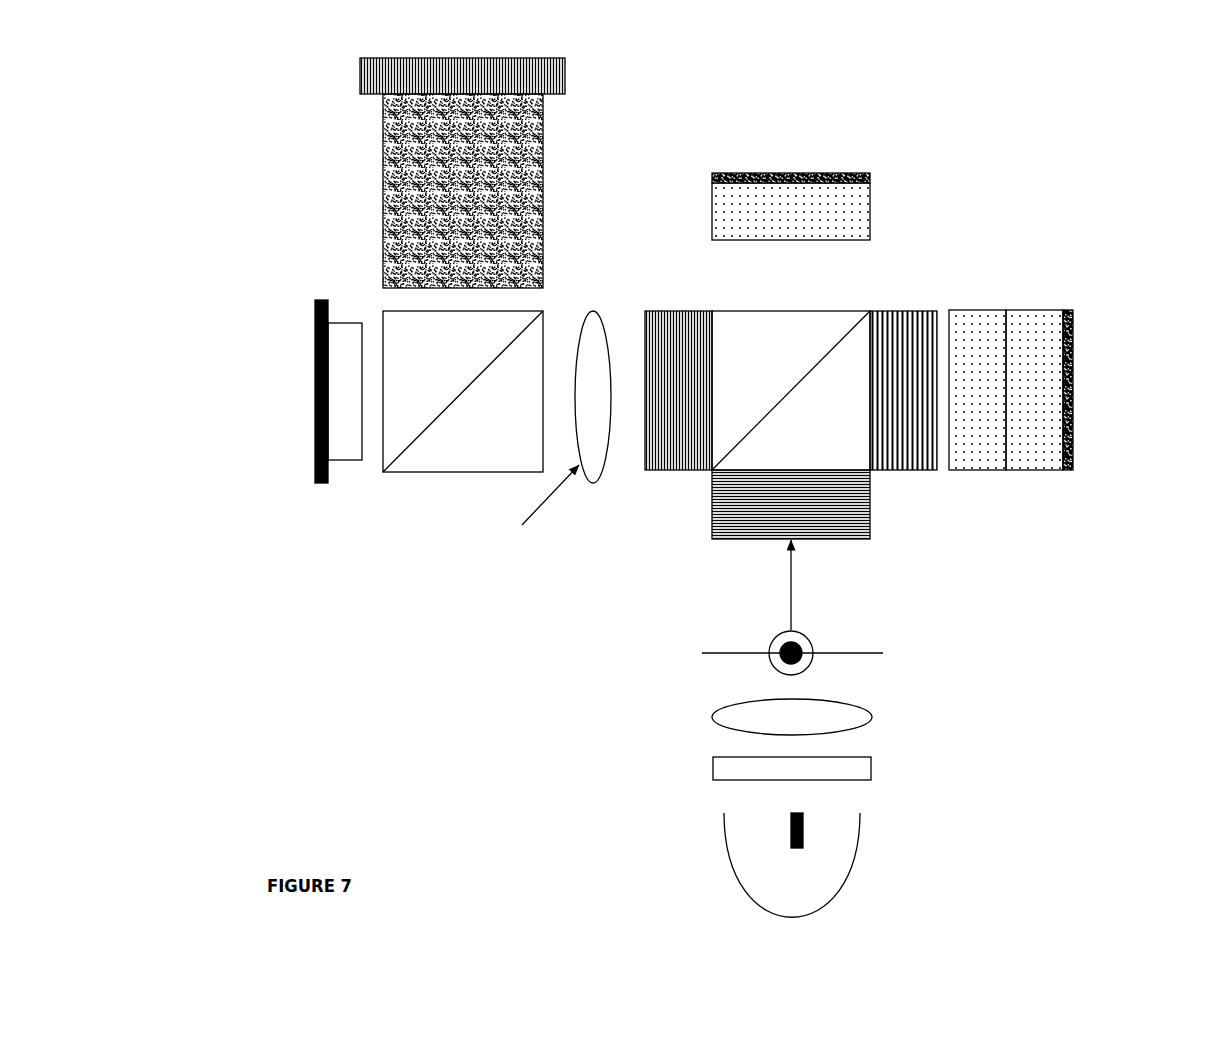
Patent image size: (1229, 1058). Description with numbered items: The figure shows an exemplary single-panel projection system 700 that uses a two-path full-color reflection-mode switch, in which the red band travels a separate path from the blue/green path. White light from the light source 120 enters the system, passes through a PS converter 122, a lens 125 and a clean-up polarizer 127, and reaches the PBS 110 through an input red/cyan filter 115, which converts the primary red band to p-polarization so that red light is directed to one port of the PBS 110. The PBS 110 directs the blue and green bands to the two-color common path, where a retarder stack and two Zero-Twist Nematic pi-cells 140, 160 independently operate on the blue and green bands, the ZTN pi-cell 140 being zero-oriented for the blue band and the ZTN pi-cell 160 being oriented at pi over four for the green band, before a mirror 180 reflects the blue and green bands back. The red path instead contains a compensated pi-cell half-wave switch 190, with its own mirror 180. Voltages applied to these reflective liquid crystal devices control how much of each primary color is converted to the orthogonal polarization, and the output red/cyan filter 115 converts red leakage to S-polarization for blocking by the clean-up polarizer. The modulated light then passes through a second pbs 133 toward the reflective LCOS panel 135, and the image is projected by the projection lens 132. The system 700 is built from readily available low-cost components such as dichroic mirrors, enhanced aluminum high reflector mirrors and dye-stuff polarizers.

The single-panel projection system 700 is at (200, 78).
The projection lens 132 is at (378, 250).
The LCOS panel 135 is at (300, 458).
The polarizing beam splitter (pbs) 133 is at (437, 476).
The red/cyan filter 115 is at (682, 550).
The PBS 110 is at (760, 308).
The light source 120 is at (897, 305).
The compensated pi-cell half-wave switch 190 is at (710, 207).
The mirror 180 is at (813, 167).
The ZTN pi-cell 160 is at (1032, 306).
The ZTN pi-cell 140 is at (983, 477).
The clean-up polarizer 127 is at (705, 653).
The lens 125 is at (716, 718).
The PS converter 122 is at (713, 763).